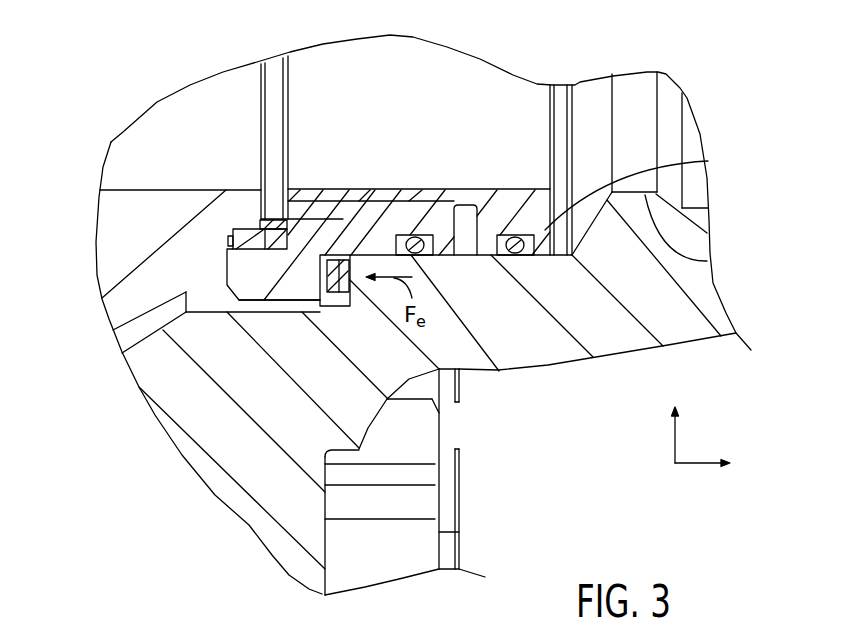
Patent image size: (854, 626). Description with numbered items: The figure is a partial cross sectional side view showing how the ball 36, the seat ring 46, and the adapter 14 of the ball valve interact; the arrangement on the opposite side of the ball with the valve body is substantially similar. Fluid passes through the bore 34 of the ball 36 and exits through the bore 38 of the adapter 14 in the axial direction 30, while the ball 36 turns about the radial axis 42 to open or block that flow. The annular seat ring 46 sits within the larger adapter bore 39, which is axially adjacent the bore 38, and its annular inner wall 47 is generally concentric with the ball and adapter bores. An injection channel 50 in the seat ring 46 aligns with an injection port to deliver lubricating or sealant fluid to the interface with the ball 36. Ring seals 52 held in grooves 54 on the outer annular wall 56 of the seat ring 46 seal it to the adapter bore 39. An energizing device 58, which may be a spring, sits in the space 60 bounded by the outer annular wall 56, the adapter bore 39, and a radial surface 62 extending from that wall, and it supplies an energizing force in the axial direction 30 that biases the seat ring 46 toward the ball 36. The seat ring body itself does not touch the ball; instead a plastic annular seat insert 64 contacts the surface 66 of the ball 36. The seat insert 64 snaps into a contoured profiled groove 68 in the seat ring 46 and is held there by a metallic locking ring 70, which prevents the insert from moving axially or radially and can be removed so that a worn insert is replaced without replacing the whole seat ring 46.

The adapter 14 is at (527, 333).
The axial direction 30 is at (691, 456).
The bore of the ball 34 is at (119, 182).
The ball 36 is at (105, 258).
The bore of the adapter 38 is at (699, 253).
The bore of the adapter 39 is at (454, 249).
The radial axis 42 is at (666, 432).
The seat ring 46 is at (700, 153).
The annular inner wall of the seat ring 47 is at (417, 182).
The injection channel 50 is at (349, 201).
The ring seal 52 is at (503, 229).
The groove 54 is at (406, 222).
The outer annular wall of the seat ring 56 is at (329, 266).
The energizing device 58 is at (331, 247).
The space 60 is at (319, 296).
The radial surface 62 is at (296, 298).
The seat insert 64 is at (224, 306).
The surface of the ball 66 is at (208, 250).
The profiled groove 68 is at (228, 247).
The locking ring 70 is at (253, 217).